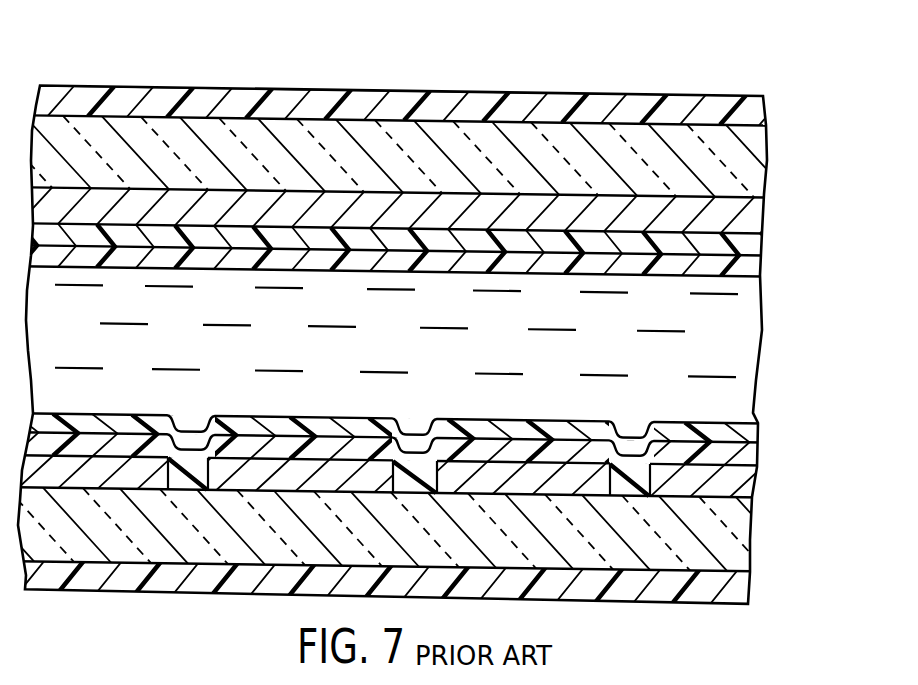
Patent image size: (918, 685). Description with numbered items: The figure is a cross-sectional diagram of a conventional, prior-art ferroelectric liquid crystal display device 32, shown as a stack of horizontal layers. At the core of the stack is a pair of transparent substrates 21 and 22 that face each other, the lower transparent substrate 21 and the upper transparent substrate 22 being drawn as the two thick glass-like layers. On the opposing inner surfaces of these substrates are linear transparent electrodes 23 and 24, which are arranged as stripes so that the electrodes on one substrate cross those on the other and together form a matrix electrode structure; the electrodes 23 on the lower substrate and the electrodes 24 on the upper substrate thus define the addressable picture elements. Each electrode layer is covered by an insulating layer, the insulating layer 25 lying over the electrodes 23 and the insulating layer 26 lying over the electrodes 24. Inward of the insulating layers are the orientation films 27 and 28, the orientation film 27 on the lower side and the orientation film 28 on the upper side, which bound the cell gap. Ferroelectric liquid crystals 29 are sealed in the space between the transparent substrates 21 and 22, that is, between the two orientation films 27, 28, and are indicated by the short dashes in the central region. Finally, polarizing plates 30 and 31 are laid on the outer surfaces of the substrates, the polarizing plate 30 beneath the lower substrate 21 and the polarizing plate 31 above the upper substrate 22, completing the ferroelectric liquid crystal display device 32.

The transparent substrate 21 is at (735, 525).
The transparent substrate 22 is at (748, 162).
The linear transparent electrodes 23 is at (748, 478).
The linear transparent electrodes 24 is at (752, 217).
The insulating layer 25 is at (747, 452).
The insulating layer 26 is at (762, 243).
The orientation film 27 is at (748, 432).
The orientation film 28 is at (747, 263).
The ferroelectric liquid crystals 29 is at (737, 318).
The polarizing plate 30 is at (738, 583).
The polarizing plate 31 is at (757, 107).
The ferroelectric liquid crystal display device 32 is at (637, 94).